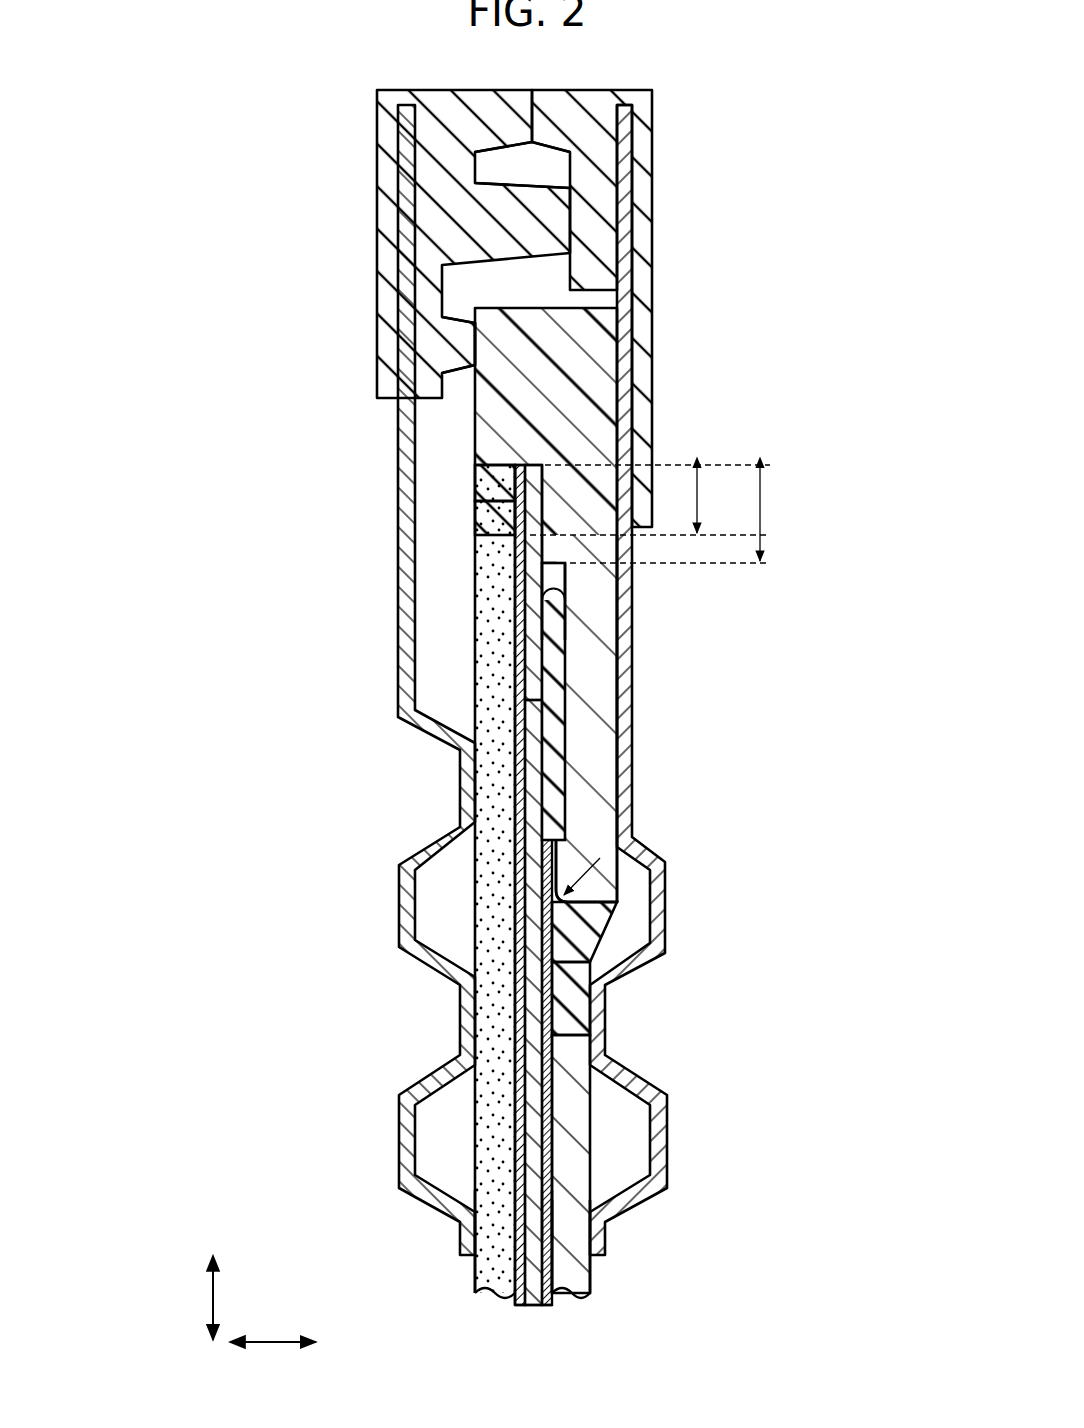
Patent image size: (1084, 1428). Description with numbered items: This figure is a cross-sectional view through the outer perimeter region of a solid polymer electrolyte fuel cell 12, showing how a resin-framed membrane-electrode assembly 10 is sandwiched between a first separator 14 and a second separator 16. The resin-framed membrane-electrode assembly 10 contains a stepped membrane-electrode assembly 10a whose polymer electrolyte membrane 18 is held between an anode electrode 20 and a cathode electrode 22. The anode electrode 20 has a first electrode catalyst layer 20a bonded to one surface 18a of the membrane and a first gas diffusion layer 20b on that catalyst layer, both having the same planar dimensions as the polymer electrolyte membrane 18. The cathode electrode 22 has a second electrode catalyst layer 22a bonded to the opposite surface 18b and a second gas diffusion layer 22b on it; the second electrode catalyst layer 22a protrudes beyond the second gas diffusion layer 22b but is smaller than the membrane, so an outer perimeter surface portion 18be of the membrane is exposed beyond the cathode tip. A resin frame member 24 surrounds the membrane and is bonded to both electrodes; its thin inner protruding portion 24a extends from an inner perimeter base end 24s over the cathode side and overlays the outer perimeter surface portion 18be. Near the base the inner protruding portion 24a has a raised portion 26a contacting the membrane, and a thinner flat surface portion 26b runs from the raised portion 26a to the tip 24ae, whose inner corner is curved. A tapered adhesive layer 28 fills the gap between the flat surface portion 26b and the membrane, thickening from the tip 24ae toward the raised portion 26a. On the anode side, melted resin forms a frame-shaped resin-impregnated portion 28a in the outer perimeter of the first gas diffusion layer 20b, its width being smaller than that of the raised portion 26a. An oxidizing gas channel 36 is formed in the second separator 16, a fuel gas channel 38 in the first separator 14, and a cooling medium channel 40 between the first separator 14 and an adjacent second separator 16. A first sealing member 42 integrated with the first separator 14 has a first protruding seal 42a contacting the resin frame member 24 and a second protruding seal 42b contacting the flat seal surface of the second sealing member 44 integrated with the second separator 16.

The solid polymer electrolyte fuel cell 12 is at (684, 62).
The resin-framed membrane-electrode assembly 10 is at (534, 705).
The membrane-electrode assembly 10a is at (658, 1164).
The first separator 14 is at (396, 905).
The second separator 16 is at (670, 879).
The polymer electrolyte membrane 18 is at (533, 915).
The surface of the polymer electrolyte membrane 18a is at (520, 1278).
The surface of the polymer electrolyte membrane 18b is at (548, 1278).
The outer perimeter surface portion 18be is at (545, 637).
The anode electrode 20 is at (392, 1241).
The first electrode catalyst layer 20a is at (480, 1210).
The first gas diffusion layer 20b is at (483, 1240).
The cathode electrode 22 is at (658, 1241).
The second electrode catalyst layer 22a is at (545, 1212).
The second gas diffusion layer 22b is at (578, 1242).
The resin frame member 24 is at (617, 649).
The inner protruding portion 24a is at (605, 737).
The tip of the inner protruding portion 24ae is at (575, 906).
The inner perimeter base end 24s is at (492, 478).
The raised portion 26a is at (546, 548).
The flat surface portion 26b is at (530, 714).
The adhesive layer 28 is at (637, 701).
The resin-impregnated portion 28a is at (492, 510).
The oxidizing gas channel 36 is at (637, 1130).
The fuel gas channel 38 is at (427, 1130).
The cooling medium channel 40 is at (412, 822).
The first sealing member 42 is at (501, 243).
The first protruding seal 42a is at (462, 345).
The second protruding seal 42b is at (555, 215).
The second sealing member 44 is at (658, 140).